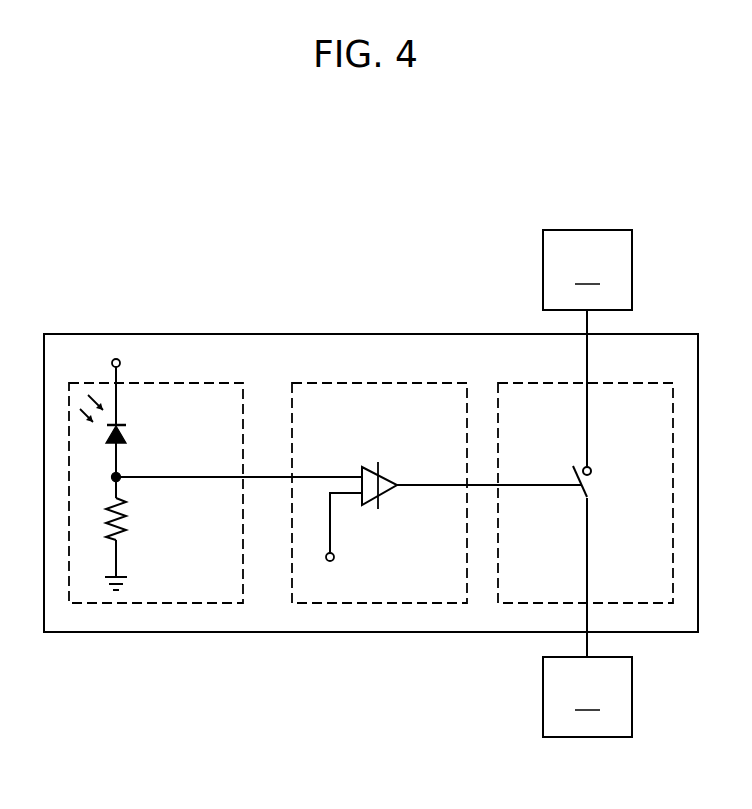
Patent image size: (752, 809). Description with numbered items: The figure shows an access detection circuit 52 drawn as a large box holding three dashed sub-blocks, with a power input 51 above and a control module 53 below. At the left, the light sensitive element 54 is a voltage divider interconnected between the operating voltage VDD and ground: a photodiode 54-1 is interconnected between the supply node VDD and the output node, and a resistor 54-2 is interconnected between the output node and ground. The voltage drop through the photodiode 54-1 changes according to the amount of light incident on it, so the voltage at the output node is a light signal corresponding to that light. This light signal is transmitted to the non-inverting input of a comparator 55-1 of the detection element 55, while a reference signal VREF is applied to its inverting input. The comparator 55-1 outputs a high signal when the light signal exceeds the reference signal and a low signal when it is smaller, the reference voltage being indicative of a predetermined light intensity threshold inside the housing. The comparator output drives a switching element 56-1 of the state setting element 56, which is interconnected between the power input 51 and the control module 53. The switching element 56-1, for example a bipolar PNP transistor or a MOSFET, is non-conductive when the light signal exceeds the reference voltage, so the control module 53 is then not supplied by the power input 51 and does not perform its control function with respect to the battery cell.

The power input 51 is at (587, 270).
The access detection circuit 52 is at (269, 334).
The control module 53 is at (587, 697).
The light sensitive element 54 is at (181, 383).
The photodiode 54-1 is at (128, 432).
The resistor 54-2 is at (124, 512).
The detection element 55 is at (378, 383).
The comparator 55-1 is at (385, 478).
The state setting element 56 is at (515, 383).
The switching element 56-1 is at (580, 490).